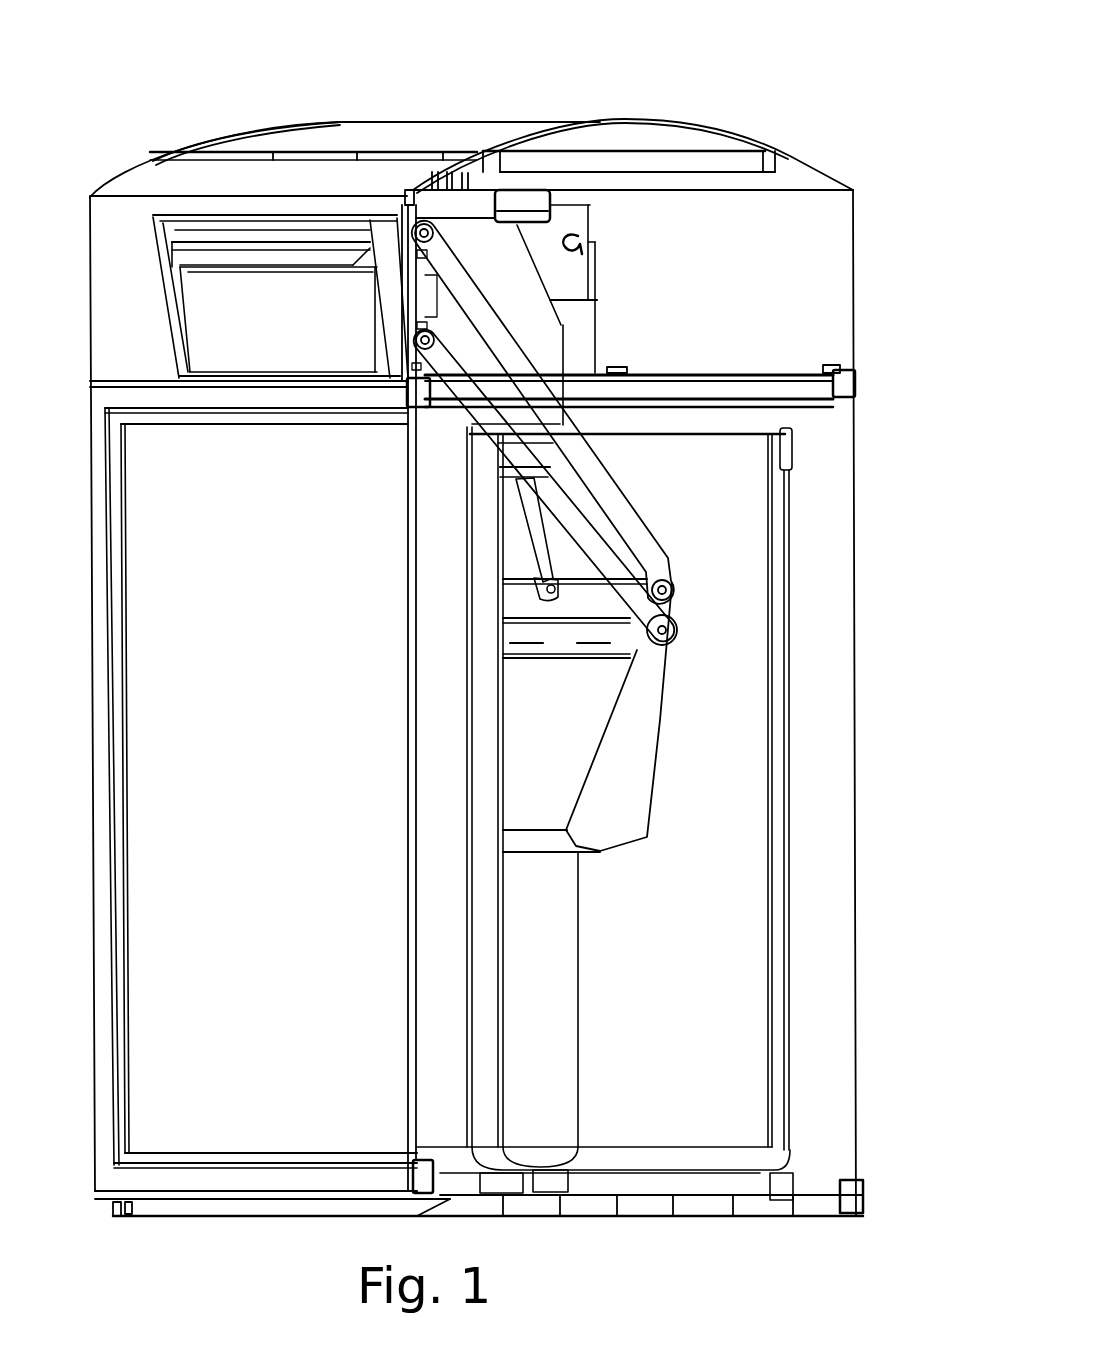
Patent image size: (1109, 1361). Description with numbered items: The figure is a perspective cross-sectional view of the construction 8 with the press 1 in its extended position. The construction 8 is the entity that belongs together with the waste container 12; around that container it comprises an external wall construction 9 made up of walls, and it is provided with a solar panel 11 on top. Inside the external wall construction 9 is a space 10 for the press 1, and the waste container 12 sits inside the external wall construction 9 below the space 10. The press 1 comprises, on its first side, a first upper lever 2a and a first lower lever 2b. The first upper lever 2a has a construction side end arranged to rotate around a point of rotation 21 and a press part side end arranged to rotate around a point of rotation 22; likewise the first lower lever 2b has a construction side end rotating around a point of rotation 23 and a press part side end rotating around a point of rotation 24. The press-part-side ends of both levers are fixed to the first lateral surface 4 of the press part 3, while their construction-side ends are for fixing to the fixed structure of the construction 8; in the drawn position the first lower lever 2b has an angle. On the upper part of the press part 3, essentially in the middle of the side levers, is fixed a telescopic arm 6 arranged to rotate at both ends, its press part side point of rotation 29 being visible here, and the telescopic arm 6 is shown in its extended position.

The press 1 is at (573, 447).
The first upper lever 2a is at (563, 427).
The first lower lever 2b is at (553, 467).
The press part 3 is at (540, 770).
The first lateral surface 4 is at (633, 775).
The telescopic arm 6 is at (523, 530).
The construction 8 is at (868, 318).
The external wall construction 9 is at (855, 617).
The space 10 is at (750, 247).
The solar panel 11 is at (426, 133).
The waste container 12 is at (750, 720).
The point of rotation 21 is at (430, 226).
The point of rotation 22 is at (670, 588).
The point of rotation 23 is at (418, 346).
The point of rotation 24 is at (660, 632).
The press part side point of rotation 29 is at (556, 586).